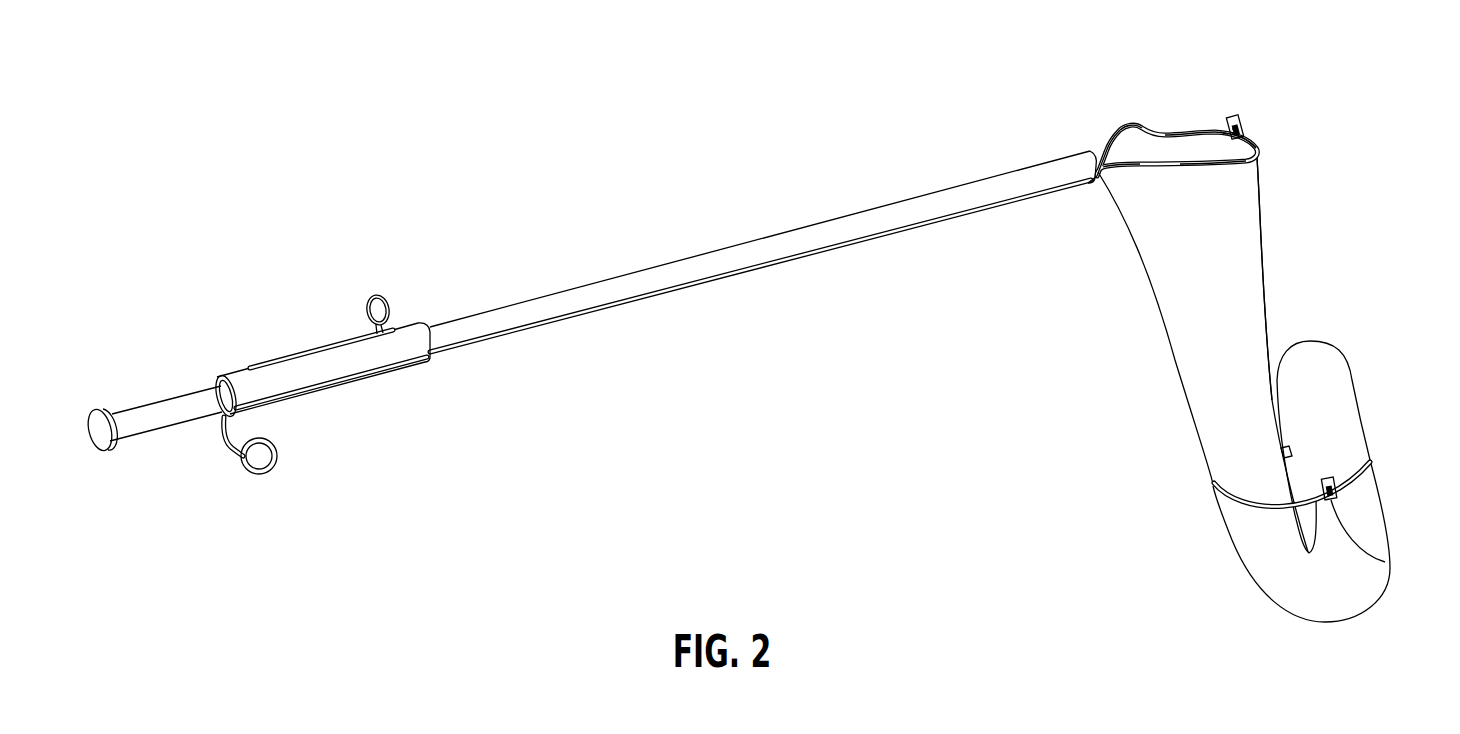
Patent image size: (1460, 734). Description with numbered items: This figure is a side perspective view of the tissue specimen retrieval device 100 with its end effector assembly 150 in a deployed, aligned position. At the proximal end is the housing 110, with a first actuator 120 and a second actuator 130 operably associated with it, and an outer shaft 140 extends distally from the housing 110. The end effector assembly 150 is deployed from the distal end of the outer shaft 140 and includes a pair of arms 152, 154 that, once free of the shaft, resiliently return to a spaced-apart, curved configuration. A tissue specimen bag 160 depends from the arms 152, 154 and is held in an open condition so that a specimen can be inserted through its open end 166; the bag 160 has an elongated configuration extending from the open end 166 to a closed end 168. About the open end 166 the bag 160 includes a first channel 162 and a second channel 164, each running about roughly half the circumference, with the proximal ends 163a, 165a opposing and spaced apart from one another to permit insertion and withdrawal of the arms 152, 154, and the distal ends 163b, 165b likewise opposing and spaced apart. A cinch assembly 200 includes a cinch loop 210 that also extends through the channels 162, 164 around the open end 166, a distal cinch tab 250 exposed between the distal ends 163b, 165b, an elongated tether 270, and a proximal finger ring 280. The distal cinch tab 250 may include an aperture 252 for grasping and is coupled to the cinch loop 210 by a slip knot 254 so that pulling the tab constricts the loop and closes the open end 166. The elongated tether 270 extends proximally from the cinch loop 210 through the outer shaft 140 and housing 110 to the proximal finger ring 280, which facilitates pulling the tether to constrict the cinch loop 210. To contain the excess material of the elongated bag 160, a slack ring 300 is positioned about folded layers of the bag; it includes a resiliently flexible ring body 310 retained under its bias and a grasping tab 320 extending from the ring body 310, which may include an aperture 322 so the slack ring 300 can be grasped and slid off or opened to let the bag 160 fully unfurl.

The tissue specimen retrieval device 100 is at (655, 218).
The housing 110 is at (358, 368).
The first actuator 120 is at (97, 408).
The second actuator 130 is at (378, 294).
The outer shaft 140 is at (603, 311).
The end effector assembly 150 is at (1153, 115).
The arm 152 is at (1213, 138).
The arm 154 is at (1126, 122).
The tissue specimen bag 160 is at (1188, 407).
The first channel 162 is at (1170, 172).
The proximal end of first channel 163a is at (1123, 172).
The distal end of first channel 163b is at (1243, 161).
The second channel 164 is at (1113, 147).
The proximal end of second channel 165a is at (1108, 160).
The distal end of second channel 165b is at (1207, 137).
The open end 166 is at (1259, 153).
The closed end 168 is at (1317, 340).
The cinch assembly 200 is at (1090, 184).
The cinch loop 210 is at (1190, 130).
The distal cinch tab 250 is at (1240, 117).
The aperture 252 is at (1244, 130).
The slip knot 254 is at (1219, 130).
The elongated tether 270 is at (221, 443).
The proximal finger ring 280 is at (260, 475).
The slack ring 300 is at (1236, 522).
The ring body 310 is at (1213, 487).
The grasping tab 320 is at (1330, 480).
The aperture 322 is at (1331, 500).